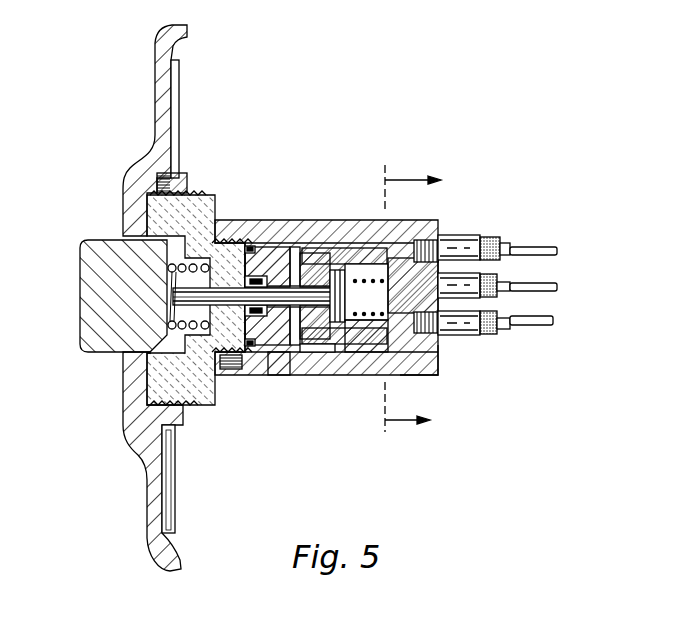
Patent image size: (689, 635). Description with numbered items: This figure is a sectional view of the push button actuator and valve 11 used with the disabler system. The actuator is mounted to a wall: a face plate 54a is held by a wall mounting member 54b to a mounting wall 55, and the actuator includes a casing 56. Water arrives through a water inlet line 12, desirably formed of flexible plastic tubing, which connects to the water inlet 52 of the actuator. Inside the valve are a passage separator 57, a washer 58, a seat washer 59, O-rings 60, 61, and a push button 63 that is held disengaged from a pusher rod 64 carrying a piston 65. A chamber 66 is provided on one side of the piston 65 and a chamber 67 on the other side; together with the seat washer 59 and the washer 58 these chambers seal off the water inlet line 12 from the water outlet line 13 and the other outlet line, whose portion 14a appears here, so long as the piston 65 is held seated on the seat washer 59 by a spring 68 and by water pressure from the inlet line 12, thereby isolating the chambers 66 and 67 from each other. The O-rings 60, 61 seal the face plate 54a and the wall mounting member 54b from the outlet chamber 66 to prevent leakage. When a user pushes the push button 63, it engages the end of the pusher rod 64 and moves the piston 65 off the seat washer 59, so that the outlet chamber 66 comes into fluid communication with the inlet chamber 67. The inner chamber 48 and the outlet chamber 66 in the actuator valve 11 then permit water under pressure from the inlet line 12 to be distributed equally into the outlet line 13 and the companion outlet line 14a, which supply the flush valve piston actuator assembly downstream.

The push button actuator and valve 11 is at (58, 187).
The water inlet line 12 is at (508, 348).
The water line 13 is at (535, 279).
The electrical pin 14a is at (533, 245).
The inner chamber 48 is at (315, 222).
The water inlet 52 is at (465, 338).
The face plate 54a is at (160, 101).
The wall mounting member 54b is at (207, 193).
The mounting wall 55 is at (176, 488).
The casing 56 is at (350, 377).
The passage separator 57 is at (440, 377).
The washer 58 is at (357, 223).
The seat washer 59 is at (340, 223).
The O-ring 60 is at (255, 223).
The O-ring 61 is at (275, 377).
The push button 63 is at (90, 303).
The pusher rod 64 is at (248, 377).
The piston 65 is at (328, 378).
The outlet chamber 66 is at (298, 223).
The inlet chamber 67 is at (367, 377).
The spring 68 is at (428, 230).